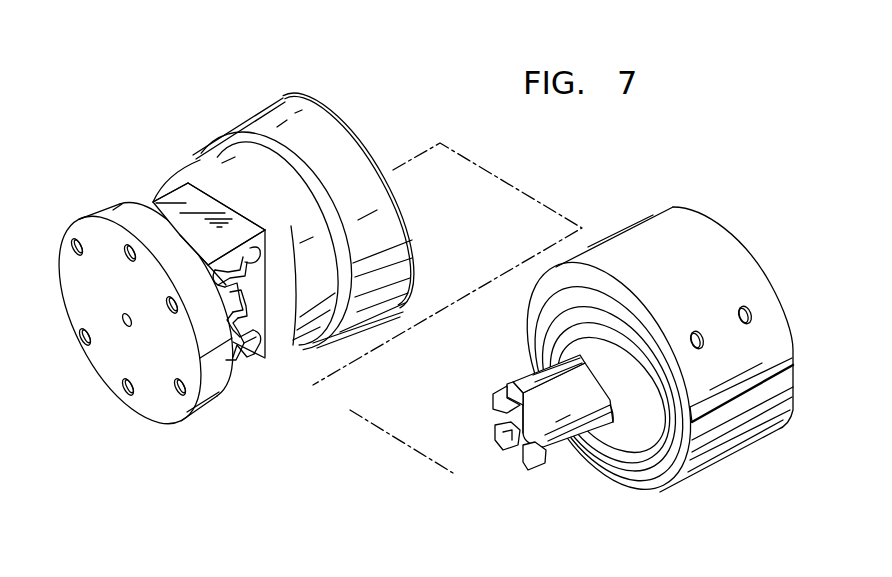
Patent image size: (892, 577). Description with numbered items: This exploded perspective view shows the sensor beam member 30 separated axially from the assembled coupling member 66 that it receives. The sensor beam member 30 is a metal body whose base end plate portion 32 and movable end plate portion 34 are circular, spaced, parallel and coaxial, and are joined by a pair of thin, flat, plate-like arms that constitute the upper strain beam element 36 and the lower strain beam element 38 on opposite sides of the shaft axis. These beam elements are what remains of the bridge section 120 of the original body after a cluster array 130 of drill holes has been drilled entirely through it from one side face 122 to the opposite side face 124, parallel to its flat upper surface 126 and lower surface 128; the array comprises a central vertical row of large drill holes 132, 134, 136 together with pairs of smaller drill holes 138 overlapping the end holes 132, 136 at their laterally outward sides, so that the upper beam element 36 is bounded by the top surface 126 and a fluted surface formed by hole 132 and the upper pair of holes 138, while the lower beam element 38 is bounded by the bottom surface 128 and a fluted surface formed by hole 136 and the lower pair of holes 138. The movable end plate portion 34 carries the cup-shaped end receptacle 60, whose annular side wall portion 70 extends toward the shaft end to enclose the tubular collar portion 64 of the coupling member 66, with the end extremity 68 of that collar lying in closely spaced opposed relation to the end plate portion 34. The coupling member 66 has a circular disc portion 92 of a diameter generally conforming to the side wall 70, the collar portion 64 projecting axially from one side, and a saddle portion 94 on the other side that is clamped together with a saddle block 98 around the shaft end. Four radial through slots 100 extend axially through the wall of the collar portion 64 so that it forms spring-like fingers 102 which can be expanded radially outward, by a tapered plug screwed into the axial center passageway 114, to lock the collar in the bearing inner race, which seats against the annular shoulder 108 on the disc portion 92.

The sensor beam member 30 is at (195, 155).
The base end plate portion 32 is at (107, 208).
The movable end plate portion 34 is at (177, 178).
The upper strain beam element 36 is at (236, 216).
The lower strain beam element 38 is at (240, 372).
The cup-shaped end receptacle 60 is at (258, 100).
The tubular collar portion 64 is at (528, 370).
The coupling member 66 is at (715, 467).
The end extremity of the collar portion 68 is at (500, 403).
The annular side wall portion 70 is at (318, 118).
The circular disc portion 92 is at (543, 290).
The saddle portion 94 is at (740, 430).
The saddle block 98 is at (717, 248).
The radial through slots 100 is at (533, 390).
The spring fingers 102 is at (510, 400).
The annular shoulder 108 is at (617, 437).
The axial center passageway 114 is at (520, 457).
The bridge section 120 is at (148, 200).
The side face 122 is at (260, 285).
The side face 124 is at (153, 201).
The upper surface 126 is at (202, 200).
The lower surface 128 is at (248, 362).
The cluster array of drill holes 130 is at (222, 298).
The large diameter drill hole 132 is at (242, 255).
The large diameter drill hole 134 is at (270, 292).
The large diameter drill hole 136 is at (245, 365).
The small diameter drill holes 138 is at (257, 260).